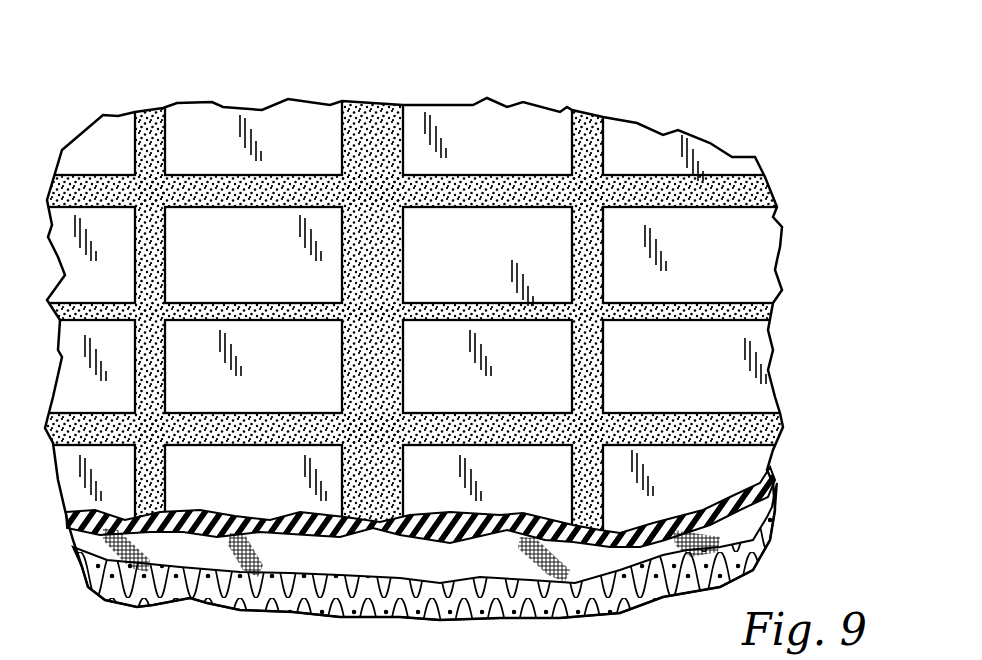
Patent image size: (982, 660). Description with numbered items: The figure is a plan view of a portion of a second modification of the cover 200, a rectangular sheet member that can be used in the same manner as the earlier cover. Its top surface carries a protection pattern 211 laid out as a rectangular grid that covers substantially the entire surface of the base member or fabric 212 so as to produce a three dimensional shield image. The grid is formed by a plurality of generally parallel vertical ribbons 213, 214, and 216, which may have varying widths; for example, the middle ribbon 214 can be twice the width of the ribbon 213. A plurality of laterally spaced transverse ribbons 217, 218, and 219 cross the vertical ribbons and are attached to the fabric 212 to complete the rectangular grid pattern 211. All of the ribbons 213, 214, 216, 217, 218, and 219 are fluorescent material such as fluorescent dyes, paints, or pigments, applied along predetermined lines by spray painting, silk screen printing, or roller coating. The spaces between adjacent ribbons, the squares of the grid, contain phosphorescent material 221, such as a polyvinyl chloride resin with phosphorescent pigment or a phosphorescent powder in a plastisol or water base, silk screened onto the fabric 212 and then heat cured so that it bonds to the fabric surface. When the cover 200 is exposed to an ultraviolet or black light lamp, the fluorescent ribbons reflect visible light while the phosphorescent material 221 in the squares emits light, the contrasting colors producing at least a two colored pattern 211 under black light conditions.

The cover 200 is at (713, 140).
The protection pattern 211 is at (742, 217).
The fabric 212 is at (388, 600).
The vertical ribbon 213 is at (157, 128).
The vertical ribbon 214 is at (383, 128).
The vertical ribbon 216 is at (593, 132).
The transverse ribbon 217 is at (743, 193).
The transverse ribbon 218 is at (753, 310).
The transverse ribbon 219 is at (758, 425).
The phosphorescent material 221 is at (723, 466).